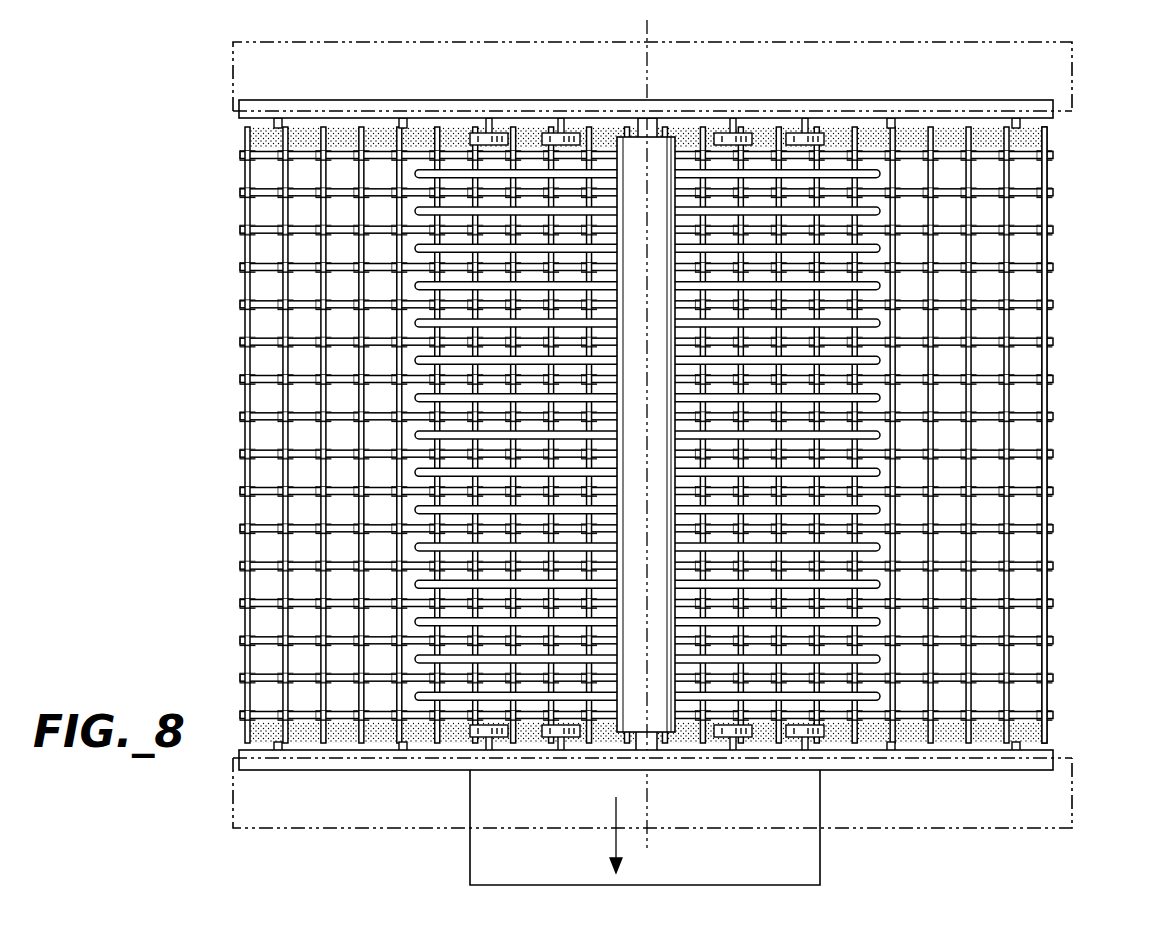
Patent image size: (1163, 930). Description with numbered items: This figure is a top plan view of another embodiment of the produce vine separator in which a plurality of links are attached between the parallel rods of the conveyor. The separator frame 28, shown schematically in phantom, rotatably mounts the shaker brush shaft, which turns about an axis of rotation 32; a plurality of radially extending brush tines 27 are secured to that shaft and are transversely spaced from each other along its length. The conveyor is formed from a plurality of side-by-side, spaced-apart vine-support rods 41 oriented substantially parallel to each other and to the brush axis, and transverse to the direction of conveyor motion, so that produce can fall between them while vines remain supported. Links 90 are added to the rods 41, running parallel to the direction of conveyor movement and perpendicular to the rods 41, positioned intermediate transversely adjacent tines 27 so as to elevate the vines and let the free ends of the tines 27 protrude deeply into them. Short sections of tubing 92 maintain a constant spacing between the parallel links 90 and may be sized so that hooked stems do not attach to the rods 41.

The brush tines 27 is at (413, 397).
The separator frame 28 is at (1085, 73).
The axis of rotation 32 is at (647, 69).
The vine-support rods 41 is at (972, 665).
The links 90 is at (1062, 525).
The sections of tubing 92 is at (1062, 700).